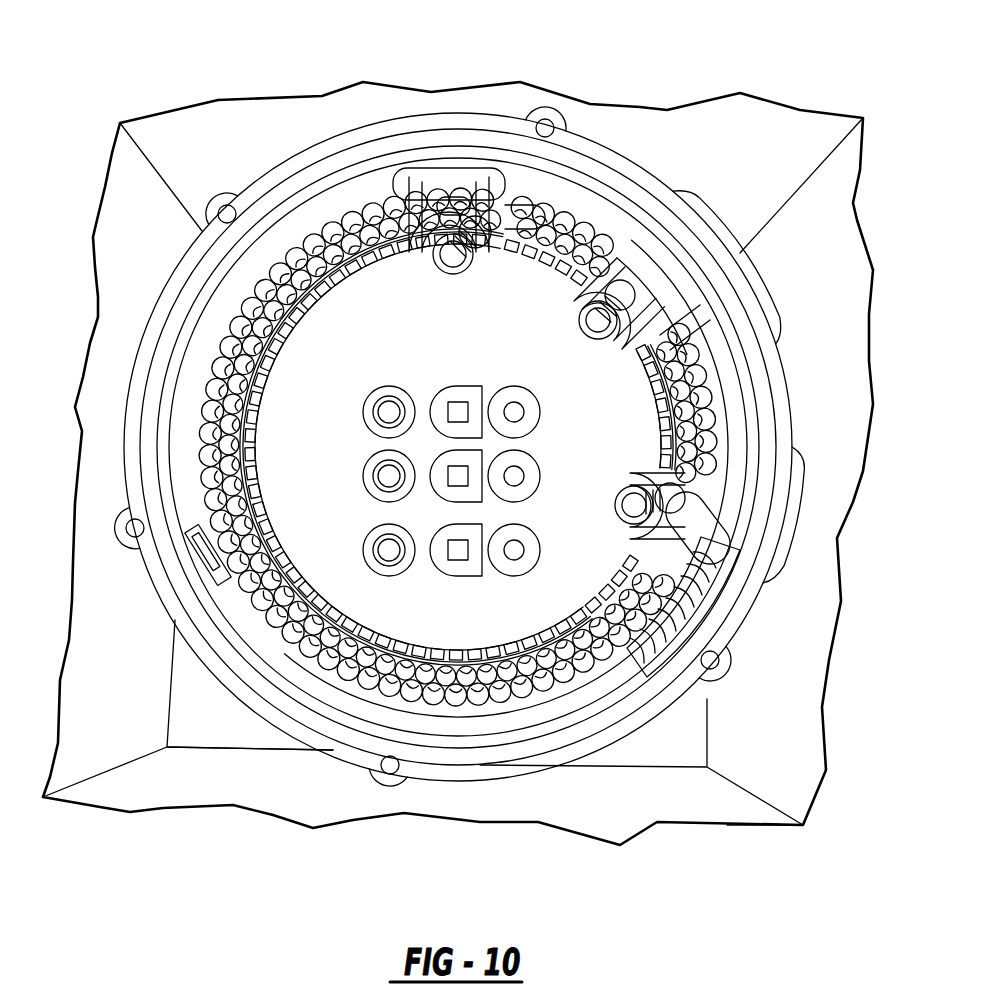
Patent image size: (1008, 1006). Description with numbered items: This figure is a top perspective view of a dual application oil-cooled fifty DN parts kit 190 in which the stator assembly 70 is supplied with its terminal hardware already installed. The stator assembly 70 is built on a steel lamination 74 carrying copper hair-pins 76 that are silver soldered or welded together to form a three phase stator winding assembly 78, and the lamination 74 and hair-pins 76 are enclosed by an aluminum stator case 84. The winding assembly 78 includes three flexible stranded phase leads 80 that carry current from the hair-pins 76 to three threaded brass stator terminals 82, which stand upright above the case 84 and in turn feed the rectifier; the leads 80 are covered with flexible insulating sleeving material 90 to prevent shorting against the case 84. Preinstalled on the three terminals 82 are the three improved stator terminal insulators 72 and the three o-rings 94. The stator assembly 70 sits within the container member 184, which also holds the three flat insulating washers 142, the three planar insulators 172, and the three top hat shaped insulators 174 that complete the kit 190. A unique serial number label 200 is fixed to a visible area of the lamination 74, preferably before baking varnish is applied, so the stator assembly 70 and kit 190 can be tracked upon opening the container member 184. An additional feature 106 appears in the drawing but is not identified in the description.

The stator assembly 70 is at (226, 735).
The improved stator terminal insulators 72 is at (444, 172).
The steel lamination 74 is at (182, 459).
The hair-pins 76 is at (259, 298).
The three phase stator winding assembly 78 is at (205, 336).
The three phase leads 80 is at (686, 627).
The threaded stator terminals 82 is at (478, 220).
The stator case 84 is at (298, 165).
The flexible insulating sleeving material 90 is at (665, 643).
The o-rings 94 is at (415, 258).
The insulator 106 is at (387, 265).
The flat insulating washers 142 is at (528, 555).
The planar insulators 172 is at (459, 580).
The top hat shaped insulators 174 is at (383, 566).
The container member 184 is at (708, 795).
The dual application oil-cooled 50 DN parts kit 190 is at (614, 80).
The serial number label 200 is at (210, 579).